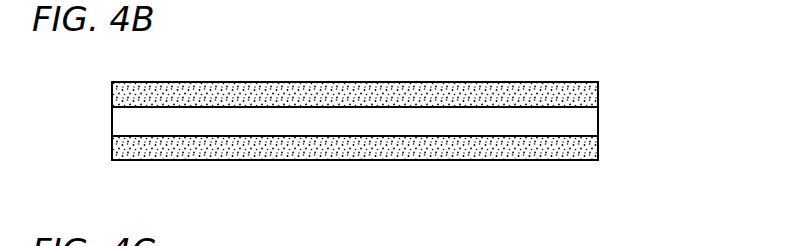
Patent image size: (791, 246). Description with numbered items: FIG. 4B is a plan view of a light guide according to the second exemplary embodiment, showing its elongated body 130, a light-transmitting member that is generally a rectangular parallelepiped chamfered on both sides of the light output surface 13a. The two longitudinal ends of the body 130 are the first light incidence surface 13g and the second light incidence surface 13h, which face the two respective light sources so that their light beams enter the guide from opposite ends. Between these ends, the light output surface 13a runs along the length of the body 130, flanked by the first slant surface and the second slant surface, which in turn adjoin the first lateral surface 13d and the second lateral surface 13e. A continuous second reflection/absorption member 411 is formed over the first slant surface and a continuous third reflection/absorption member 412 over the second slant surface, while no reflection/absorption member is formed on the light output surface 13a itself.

The body 130 is at (598, 82).
The second reflection/absorption member 411 is at (508, 91).
The third reflection/absorption member 412 is at (508, 152).
The light output surface 13a is at (587, 118).
The first lateral surface 13d is at (453, 82).
The second lateral surface 13e is at (457, 160).
The first light incidence surface 13g is at (599, 128).
The second light incidence surface 13h is at (112, 118).